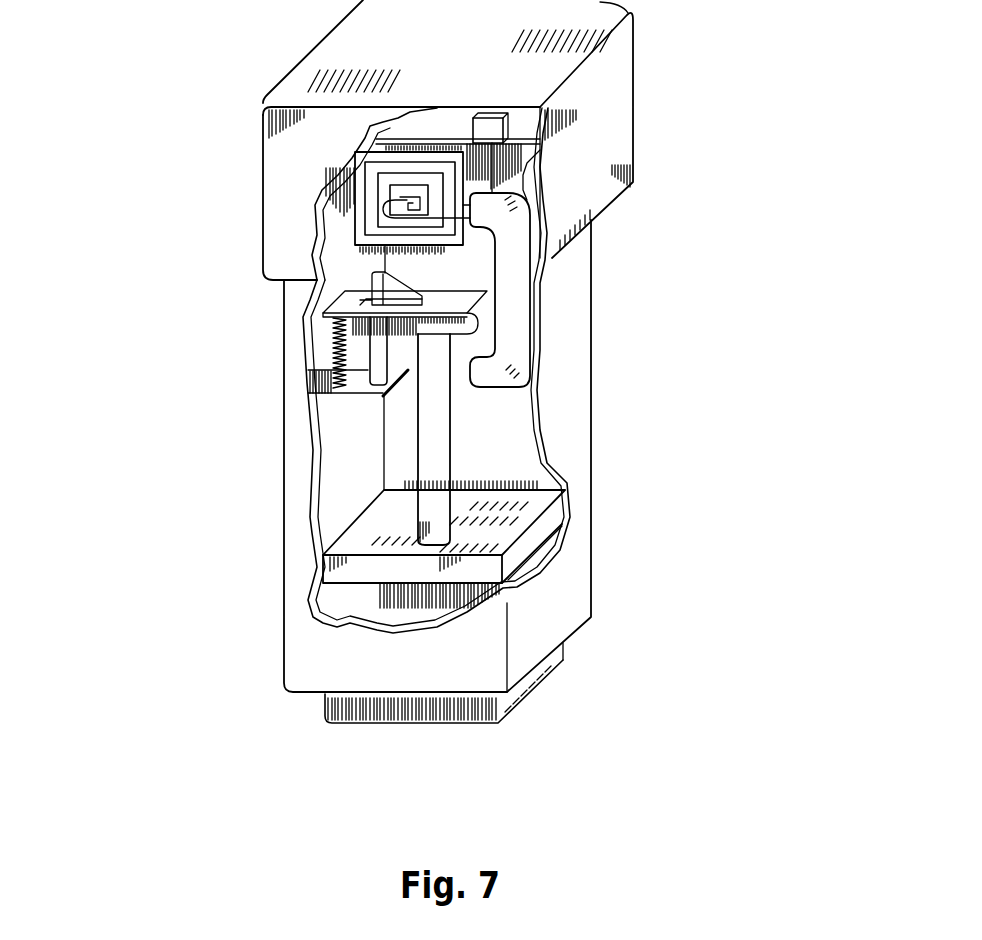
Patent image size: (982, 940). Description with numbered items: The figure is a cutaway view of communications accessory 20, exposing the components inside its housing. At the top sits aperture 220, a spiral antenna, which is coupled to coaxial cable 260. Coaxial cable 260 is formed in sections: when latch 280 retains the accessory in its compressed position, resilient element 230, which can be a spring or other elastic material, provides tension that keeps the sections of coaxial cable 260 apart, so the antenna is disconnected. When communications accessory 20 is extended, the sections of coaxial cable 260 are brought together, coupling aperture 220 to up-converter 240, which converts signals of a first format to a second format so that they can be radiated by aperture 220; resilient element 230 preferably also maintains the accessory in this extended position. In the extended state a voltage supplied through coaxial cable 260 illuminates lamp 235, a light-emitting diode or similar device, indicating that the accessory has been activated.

The communications accessory 20 is at (898, 380).
The aperture 220 is at (373, 183).
The resilient element 230 is at (330, 322).
The lamp 235 is at (491, 127).
The up-converter 240 is at (367, 538).
The coaxial cable 260 is at (508, 303).
The latch 280 is at (377, 358).